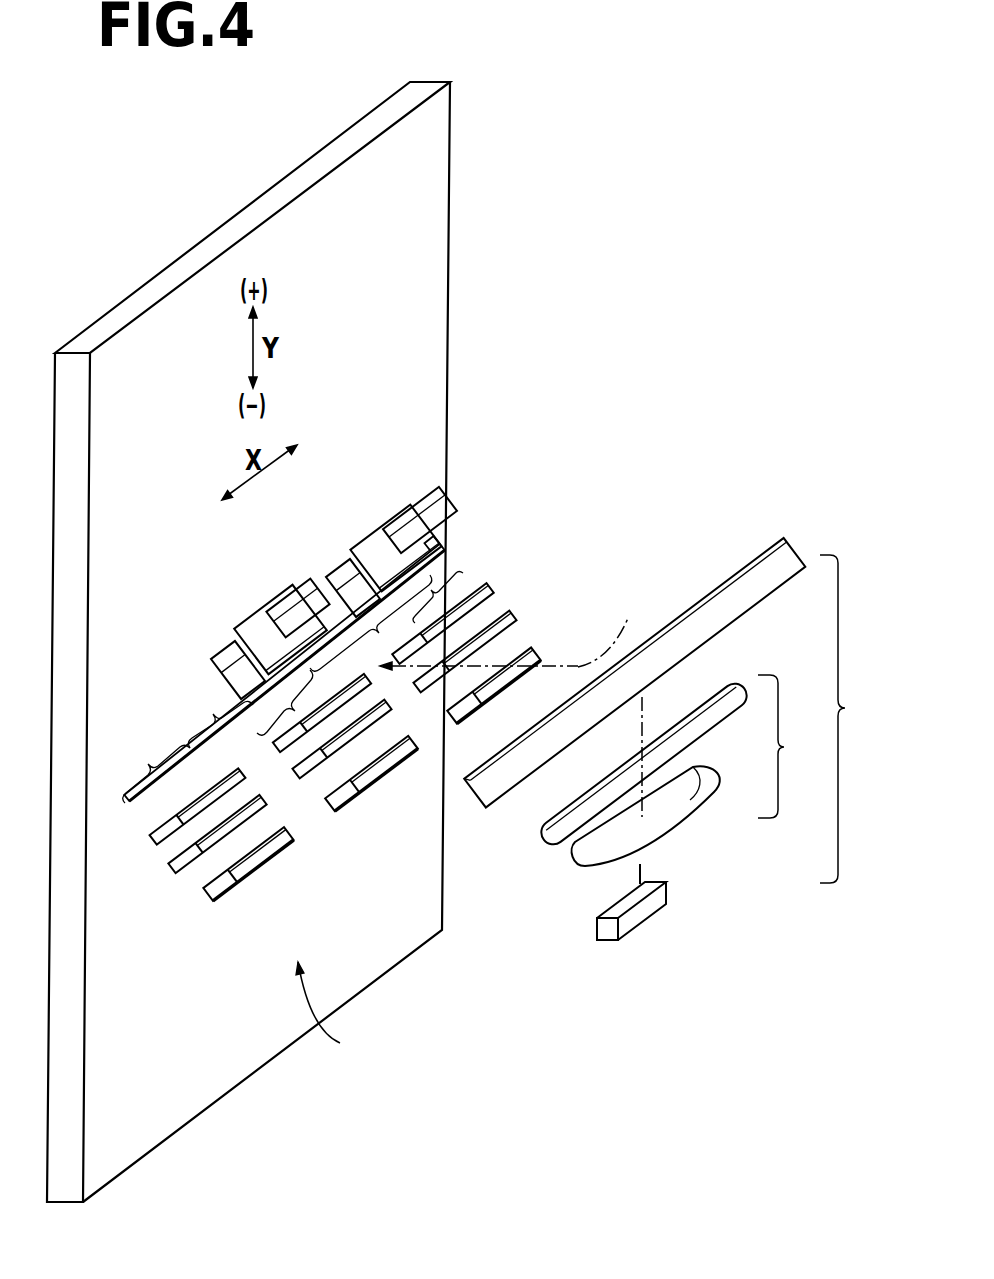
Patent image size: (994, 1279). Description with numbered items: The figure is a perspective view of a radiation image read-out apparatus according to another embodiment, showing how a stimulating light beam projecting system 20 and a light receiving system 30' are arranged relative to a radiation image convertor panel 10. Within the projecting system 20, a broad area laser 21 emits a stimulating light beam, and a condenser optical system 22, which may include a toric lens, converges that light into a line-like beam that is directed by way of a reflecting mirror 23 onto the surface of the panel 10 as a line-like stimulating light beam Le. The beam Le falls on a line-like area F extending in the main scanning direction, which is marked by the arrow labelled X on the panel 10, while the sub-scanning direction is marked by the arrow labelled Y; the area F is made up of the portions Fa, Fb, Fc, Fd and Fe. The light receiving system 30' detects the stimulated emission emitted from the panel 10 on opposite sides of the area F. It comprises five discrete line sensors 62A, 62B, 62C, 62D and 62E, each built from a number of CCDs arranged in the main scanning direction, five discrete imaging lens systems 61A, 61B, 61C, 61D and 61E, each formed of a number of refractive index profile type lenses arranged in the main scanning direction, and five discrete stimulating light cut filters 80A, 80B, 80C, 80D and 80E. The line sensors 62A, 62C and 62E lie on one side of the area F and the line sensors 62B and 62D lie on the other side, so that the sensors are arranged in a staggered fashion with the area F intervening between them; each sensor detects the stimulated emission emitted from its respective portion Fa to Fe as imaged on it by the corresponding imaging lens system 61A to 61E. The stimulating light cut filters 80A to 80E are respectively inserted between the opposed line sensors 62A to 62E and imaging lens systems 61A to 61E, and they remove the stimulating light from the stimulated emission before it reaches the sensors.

The radiation image convertor panel 10 is at (432, 200).
The stimulating light beam projecting system 20 is at (671, 739).
The broad area laser 21 is at (670, 890).
The condenser optical system 22 is at (676, 770).
The reflecting mirror 23 is at (757, 593).
The light receiving system 30' is at (338, 1012).
The imaging lens system 61A is at (150, 846).
The imaging lens system 61B is at (230, 660).
The imaging lens system 61C is at (276, 755).
The imaging lens system 61D is at (350, 573).
The imaging lens system 61E is at (490, 586).
The line sensor 62A is at (210, 898).
The line sensor 62B is at (312, 592).
The line sensor 62C is at (358, 800).
The line sensor 62D is at (445, 500).
The line sensor 62E is at (535, 648).
The stimulating light cut filter 80A is at (175, 868).
The stimulating light cut filter 80B is at (255, 628).
The stimulating light cut filter 80C is at (296, 777).
The stimulating light cut filter 80D is at (373, 538).
The stimulating light cut filter 80E is at (510, 612).
The line-like area F is at (127, 803).
The area Fa is at (156, 768).
The area Fb is at (216, 719).
The area Fc is at (272, 717).
The area Fd is at (371, 623).
The area Fe is at (446, 583).
The stimulating light beam Le is at (514, 628).